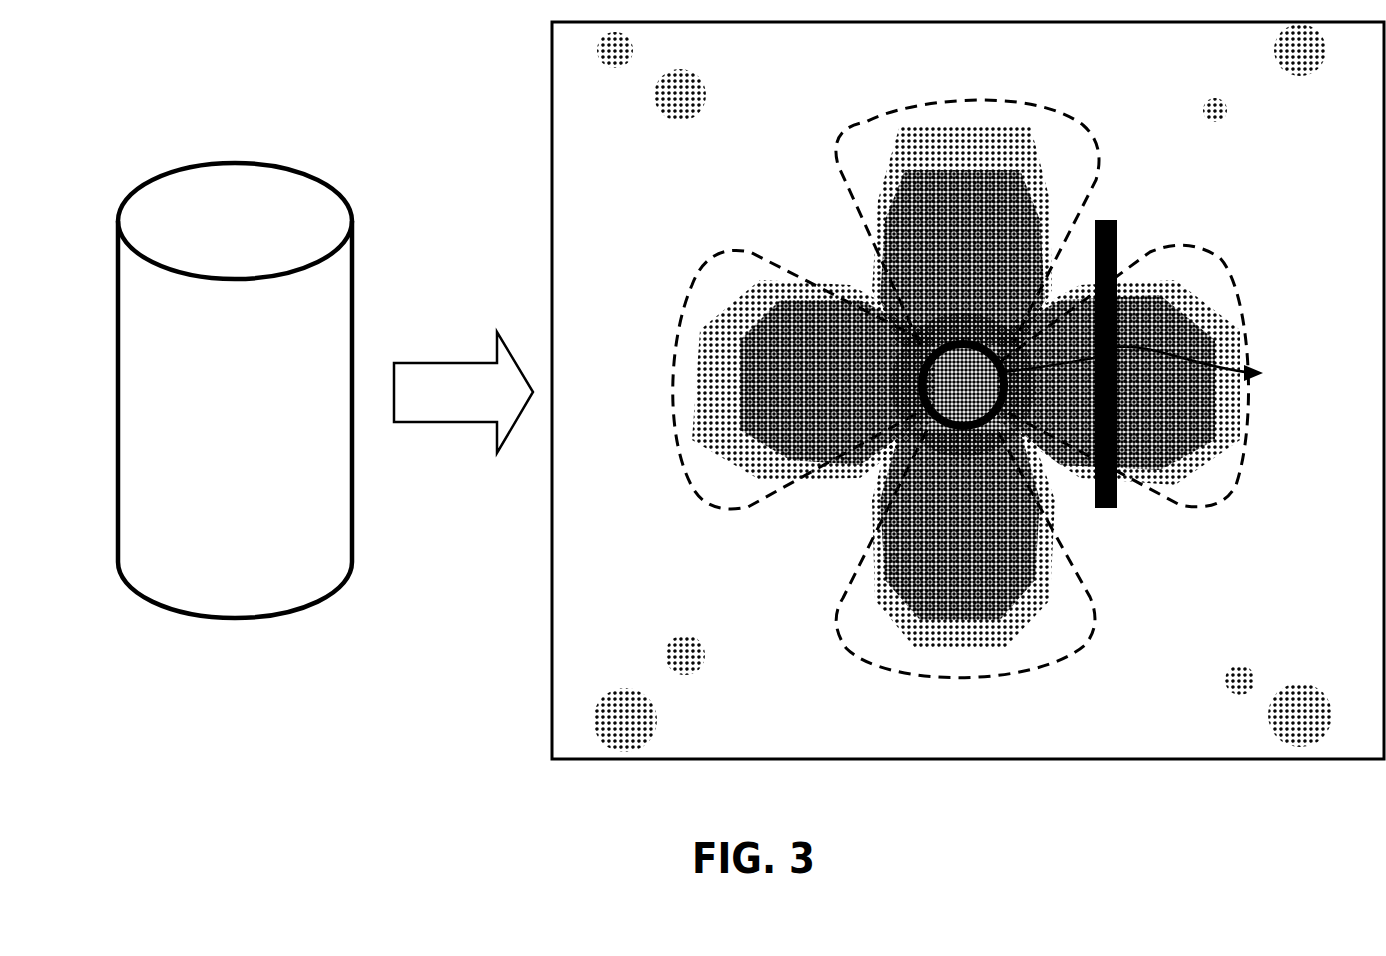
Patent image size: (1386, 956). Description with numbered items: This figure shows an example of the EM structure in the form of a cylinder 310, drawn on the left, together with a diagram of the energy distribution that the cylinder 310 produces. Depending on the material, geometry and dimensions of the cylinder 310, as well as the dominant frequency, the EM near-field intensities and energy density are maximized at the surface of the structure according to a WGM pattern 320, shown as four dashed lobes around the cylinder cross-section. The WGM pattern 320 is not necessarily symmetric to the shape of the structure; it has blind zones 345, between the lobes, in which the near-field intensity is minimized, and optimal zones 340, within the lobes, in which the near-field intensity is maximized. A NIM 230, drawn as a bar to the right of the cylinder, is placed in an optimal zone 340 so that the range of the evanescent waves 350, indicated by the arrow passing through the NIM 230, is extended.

The cylinder 310 is at (127, 200).
The WGM pattern 320 is at (858, 118).
The blind zone 345 is at (893, 308).
The NIM 230 is at (1118, 240).
The evanescent waves 350 is at (1170, 352).
The optimal zone 340 is at (1172, 507).